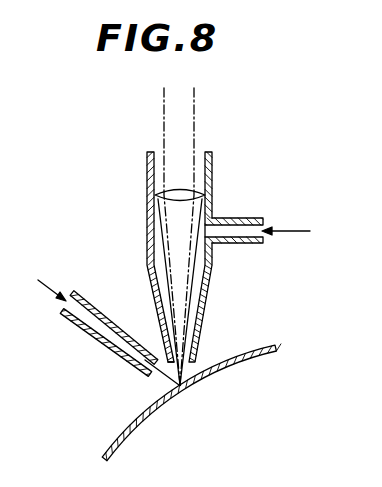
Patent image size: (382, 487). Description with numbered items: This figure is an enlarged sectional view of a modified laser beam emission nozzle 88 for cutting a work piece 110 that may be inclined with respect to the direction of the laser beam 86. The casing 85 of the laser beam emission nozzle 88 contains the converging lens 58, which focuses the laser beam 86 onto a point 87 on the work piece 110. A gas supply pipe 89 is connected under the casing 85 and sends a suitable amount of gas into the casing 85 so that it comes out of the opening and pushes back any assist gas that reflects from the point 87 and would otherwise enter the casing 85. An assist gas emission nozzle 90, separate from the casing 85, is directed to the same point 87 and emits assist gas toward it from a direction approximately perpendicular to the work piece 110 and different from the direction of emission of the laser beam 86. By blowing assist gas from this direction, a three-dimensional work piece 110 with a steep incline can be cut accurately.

The converging lens 58 is at (160, 197).
The casing 85 is at (212, 160).
The laser beam 86 is at (194, 107).
The point 87 is at (178, 386).
The laser beam emission nozzle 88 is at (157, 310).
The gas supply pipe 89 is at (252, 222).
The assist gas emission nozzle 90 is at (92, 332).
The work piece 110 is at (236, 353).